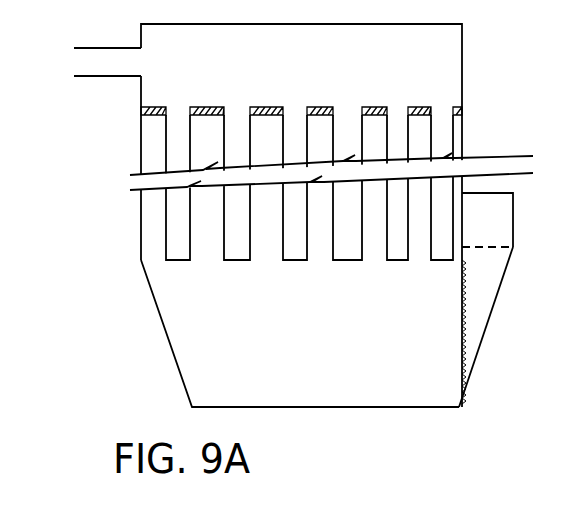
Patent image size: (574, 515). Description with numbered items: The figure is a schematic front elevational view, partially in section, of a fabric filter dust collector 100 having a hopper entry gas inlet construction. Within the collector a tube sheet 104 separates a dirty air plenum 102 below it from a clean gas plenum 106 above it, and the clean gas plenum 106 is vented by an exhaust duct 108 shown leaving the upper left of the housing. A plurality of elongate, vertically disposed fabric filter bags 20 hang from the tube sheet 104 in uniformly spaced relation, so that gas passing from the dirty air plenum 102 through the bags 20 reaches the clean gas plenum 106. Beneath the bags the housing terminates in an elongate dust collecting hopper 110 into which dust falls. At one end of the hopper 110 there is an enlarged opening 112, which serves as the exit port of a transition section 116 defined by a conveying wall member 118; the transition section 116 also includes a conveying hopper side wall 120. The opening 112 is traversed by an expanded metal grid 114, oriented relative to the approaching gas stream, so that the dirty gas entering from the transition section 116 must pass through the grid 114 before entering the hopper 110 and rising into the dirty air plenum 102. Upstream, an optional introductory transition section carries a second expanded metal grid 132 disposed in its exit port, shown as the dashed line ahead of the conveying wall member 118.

The fabric filter dust collector 100 is at (470, 90).
The dirty air plenum 102 is at (150, 221).
The tube sheet 104 is at (149, 112).
The clean gas plenum 106 is at (445, 52).
The exhaust duct 108 is at (97, 47).
The dust collecting hopper 110 is at (180, 322).
The enlarged opening 112 is at (448, 283).
The expanded metal grid 114 is at (459, 338).
The transition section 116 is at (503, 302).
The conveying wall member 118 is at (482, 341).
The conveying hopper side wall 120 is at (260, 357).
The expanded metal grid 132 is at (483, 248).
The fabric filter bags 20 is at (165, 143).